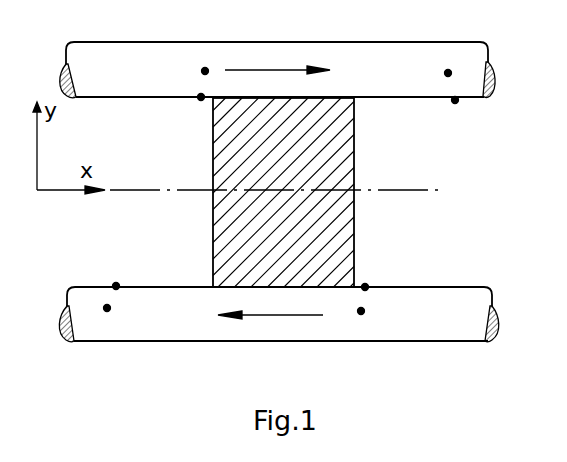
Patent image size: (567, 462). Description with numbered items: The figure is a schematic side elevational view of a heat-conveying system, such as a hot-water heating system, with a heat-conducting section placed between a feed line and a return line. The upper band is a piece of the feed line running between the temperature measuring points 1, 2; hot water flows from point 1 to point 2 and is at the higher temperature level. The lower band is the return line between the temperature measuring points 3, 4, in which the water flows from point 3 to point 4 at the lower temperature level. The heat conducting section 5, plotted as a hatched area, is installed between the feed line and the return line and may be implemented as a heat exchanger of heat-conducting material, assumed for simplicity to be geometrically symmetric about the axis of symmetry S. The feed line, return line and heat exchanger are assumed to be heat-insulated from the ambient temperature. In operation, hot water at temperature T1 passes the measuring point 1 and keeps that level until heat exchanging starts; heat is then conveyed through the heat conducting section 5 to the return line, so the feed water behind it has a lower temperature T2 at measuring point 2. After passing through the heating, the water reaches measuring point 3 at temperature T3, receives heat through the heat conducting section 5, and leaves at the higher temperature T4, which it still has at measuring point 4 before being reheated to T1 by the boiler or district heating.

The temperature measuring point 1 is at (63, 77).
The temperature measuring point 2 is at (498, 85).
The temperature measuring point 3 is at (497, 336).
The temperature measuring point 4 is at (62, 334).
The heat conducting section 5 is at (340, 157).
The axis of symmetry S is at (288, 193).
The temperature of hot water at measuring point 1 T1 is at (201, 97).
The temperature of water at measuring point 2 T2 is at (455, 100).
The temperature of water at measuring point 3 T3 is at (361, 311).
The temperature of water at measuring point 4 T4 is at (107, 308).